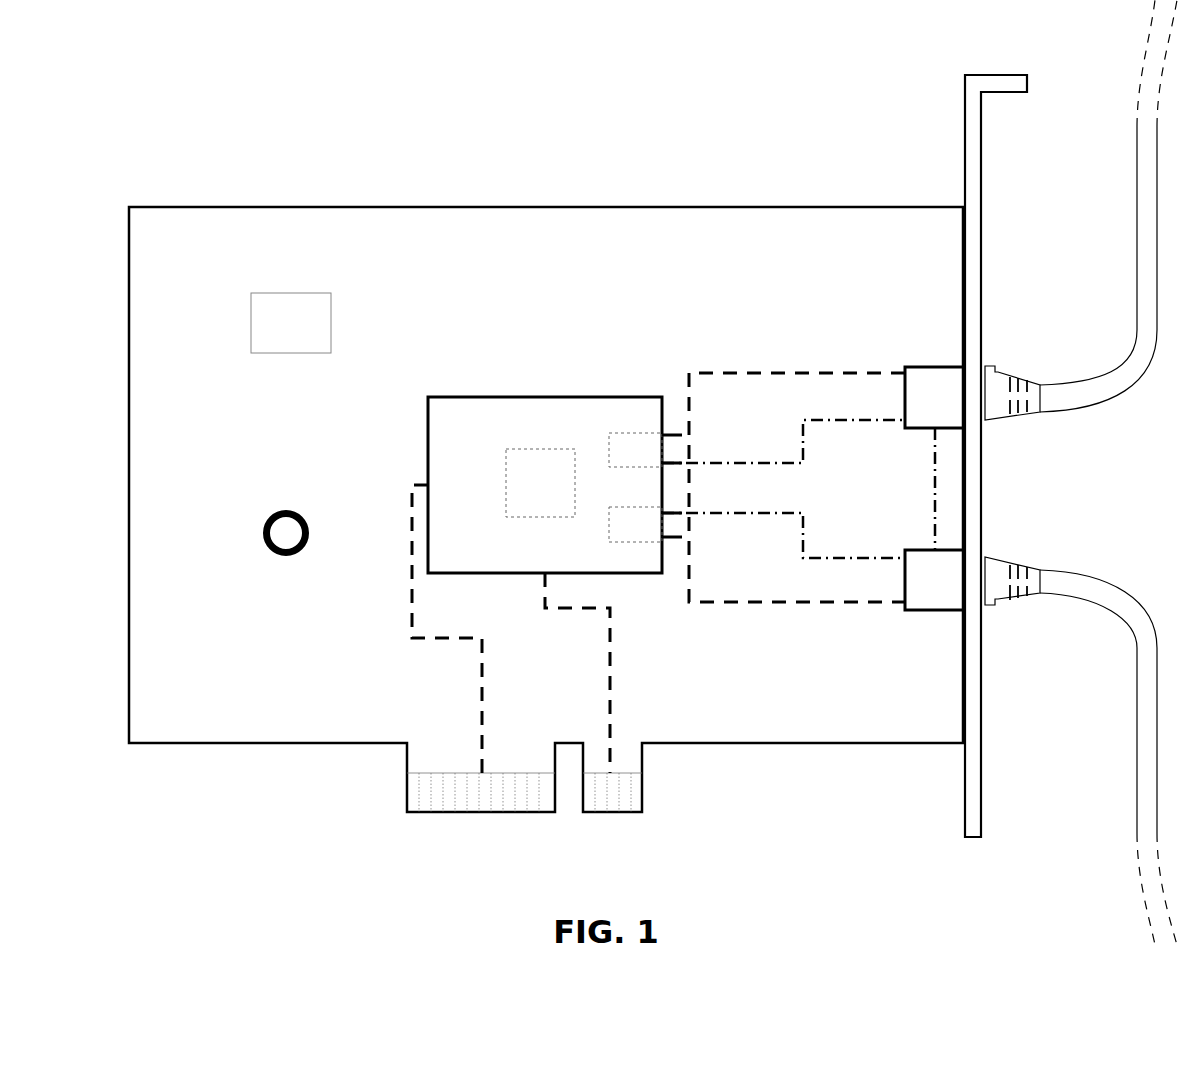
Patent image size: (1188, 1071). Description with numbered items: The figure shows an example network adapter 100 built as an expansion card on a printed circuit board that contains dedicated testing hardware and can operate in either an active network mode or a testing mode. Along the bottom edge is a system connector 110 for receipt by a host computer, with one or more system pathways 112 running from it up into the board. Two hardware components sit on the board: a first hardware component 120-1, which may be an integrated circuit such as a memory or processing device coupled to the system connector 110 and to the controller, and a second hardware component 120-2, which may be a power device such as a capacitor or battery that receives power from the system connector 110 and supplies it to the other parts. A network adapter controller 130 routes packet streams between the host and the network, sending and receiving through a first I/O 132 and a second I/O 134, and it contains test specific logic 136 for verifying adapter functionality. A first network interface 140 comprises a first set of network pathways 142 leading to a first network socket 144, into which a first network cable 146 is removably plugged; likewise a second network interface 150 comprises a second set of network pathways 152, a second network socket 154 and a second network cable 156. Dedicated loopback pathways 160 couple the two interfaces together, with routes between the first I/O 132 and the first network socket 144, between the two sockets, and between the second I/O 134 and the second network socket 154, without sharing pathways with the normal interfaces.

The network adapter 100 is at (508, 198).
The system connector 110 is at (393, 803).
The system pathways 112 is at (600, 727).
The first hardware component 120-1 is at (263, 334).
The second hardware component 120-2 is at (283, 557).
The network adapter controller 130 is at (543, 397).
The first input/output (I/O) 132 is at (619, 461).
The second input/output (I/O) 134 is at (619, 536).
The test specific logic 136 is at (522, 494).
The first network interface 140 is at (826, 409).
The first set of network pathways 142 is at (763, 359).
The first network socket 144 is at (916, 408).
The first network cable 146 is at (1137, 329).
The second network interface 150 is at (813, 573).
The second set of network pathways 152 is at (741, 611).
The second network socket 154 is at (916, 591).
The second network cable 156 is at (1137, 648).
The dedicated loopback pathways 160 is at (866, 548).